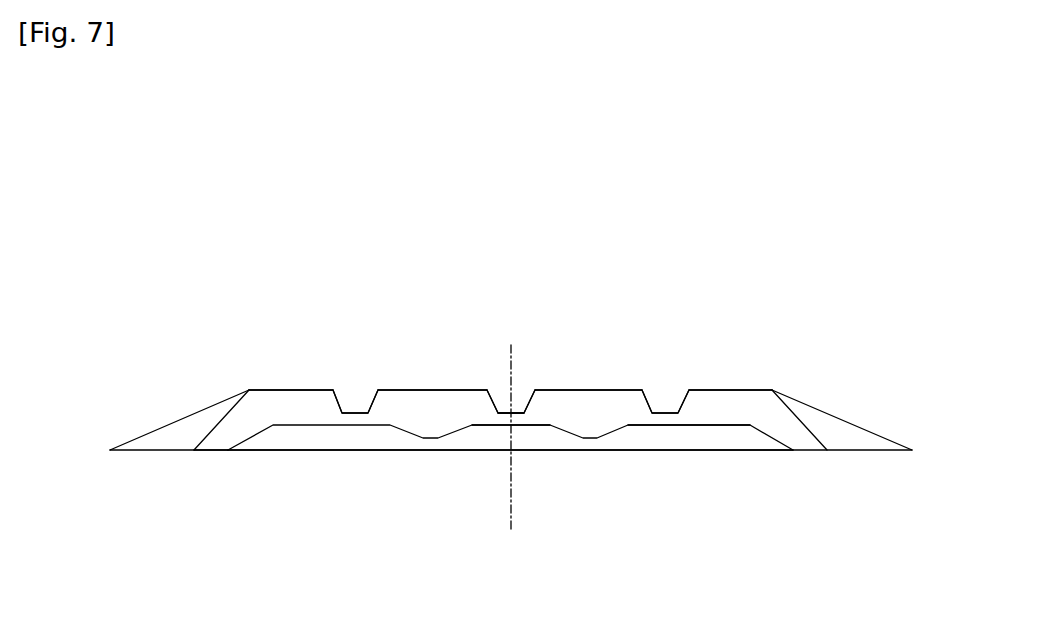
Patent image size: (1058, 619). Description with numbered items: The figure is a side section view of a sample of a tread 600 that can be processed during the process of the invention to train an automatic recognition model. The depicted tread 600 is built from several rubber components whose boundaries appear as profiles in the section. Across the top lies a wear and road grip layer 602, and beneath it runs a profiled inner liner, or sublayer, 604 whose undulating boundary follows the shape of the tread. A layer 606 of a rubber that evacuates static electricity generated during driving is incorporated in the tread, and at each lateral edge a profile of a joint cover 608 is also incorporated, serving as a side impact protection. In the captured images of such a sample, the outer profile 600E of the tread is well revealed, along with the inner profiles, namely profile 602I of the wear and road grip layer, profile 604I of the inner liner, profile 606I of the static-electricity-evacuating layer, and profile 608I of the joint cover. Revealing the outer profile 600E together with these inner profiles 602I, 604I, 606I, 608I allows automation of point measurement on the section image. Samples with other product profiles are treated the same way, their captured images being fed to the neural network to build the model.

The tread 600 is at (860, 263).
The outer profile 600E is at (300, 390).
The wear and road grip layer 602 is at (743, 406).
The profile 602I is at (562, 425).
The profiled inner liner 604 is at (687, 435).
The profile 604I is at (642, 425).
The layer of rubber 606 is at (513, 402).
The profile 606I is at (505, 420).
The joint cover 608 is at (877, 435).
The profile 608I is at (212, 430).